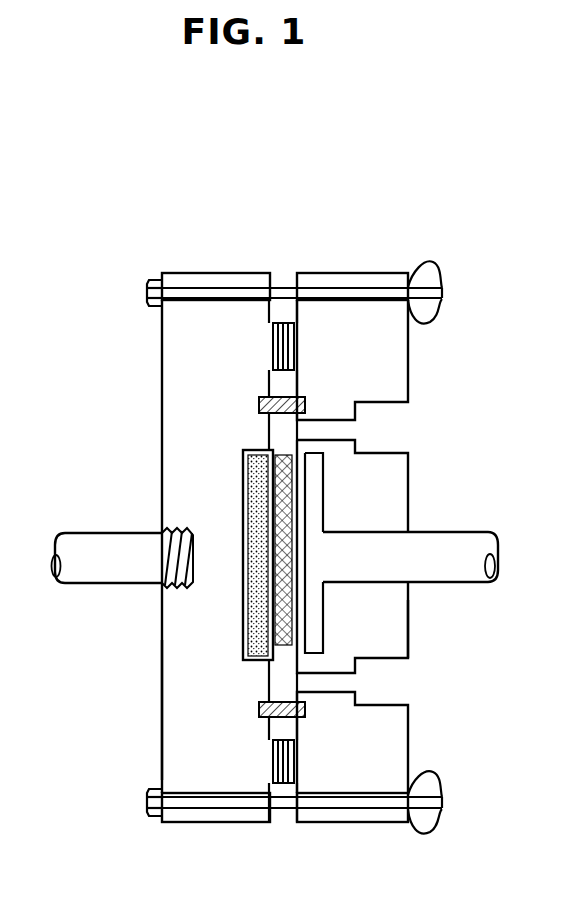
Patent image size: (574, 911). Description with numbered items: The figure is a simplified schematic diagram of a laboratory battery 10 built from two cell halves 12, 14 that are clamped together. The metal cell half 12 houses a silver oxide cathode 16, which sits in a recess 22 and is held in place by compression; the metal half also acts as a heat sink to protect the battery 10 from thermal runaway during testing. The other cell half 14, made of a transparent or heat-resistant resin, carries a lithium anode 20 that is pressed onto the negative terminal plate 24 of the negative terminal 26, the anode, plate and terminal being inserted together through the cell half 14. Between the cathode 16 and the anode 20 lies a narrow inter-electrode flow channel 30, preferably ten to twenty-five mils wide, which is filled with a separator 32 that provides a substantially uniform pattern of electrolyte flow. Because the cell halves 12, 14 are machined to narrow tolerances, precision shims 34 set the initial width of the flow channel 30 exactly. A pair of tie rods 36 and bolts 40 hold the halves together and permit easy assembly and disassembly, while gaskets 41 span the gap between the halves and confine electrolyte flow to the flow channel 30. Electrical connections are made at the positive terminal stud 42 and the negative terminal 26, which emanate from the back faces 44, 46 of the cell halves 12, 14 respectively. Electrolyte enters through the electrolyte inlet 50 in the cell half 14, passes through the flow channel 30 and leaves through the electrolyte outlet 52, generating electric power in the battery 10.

The laboratory battery 10 is at (317, 205).
The metal cell half 12 is at (173, 382).
The cell half 14 is at (395, 360).
The cathode 16 is at (256, 488).
The anode 20 is at (302, 503).
The recess 22 is at (255, 668).
The negative terminal plate 24 is at (313, 618).
The negative terminal 26 is at (450, 540).
The inter-electrode flow channel 30 is at (262, 468).
The separator 32 is at (275, 590).
The precision shims 34 is at (283, 345).
The tie rods 36 is at (283, 292).
The bolts 40 is at (432, 272).
The gaskets 41 is at (258, 405).
The positive terminal stud 42 is at (85, 540).
The back face 44 is at (162, 682).
The back face 46 is at (408, 640).
The electrolyte inlet 50 is at (384, 679).
The electrolyte outlet 52 is at (398, 420).